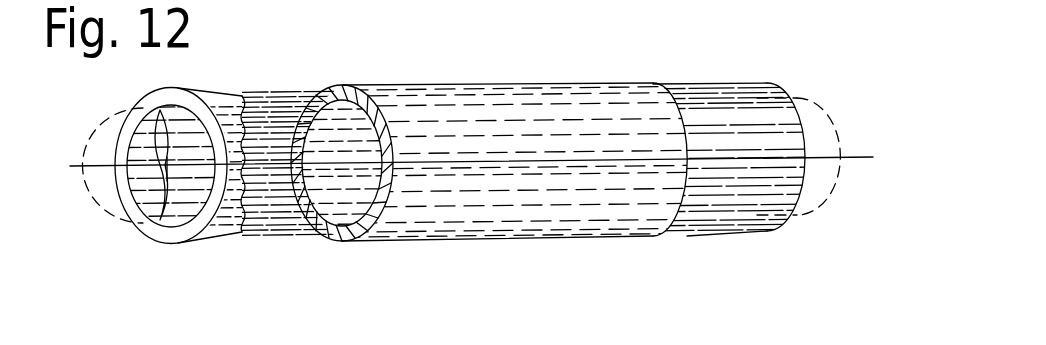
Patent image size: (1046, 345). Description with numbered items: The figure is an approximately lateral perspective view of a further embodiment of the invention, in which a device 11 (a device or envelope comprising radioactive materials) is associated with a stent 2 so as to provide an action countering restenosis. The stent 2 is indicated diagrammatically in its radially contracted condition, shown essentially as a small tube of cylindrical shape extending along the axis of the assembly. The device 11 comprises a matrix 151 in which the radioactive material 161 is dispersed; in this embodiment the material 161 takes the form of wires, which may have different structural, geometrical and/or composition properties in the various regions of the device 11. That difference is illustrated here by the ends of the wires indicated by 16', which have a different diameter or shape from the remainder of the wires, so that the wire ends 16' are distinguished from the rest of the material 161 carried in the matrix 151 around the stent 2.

The stent 2 is at (788, 262).
The device 11 is at (643, 250).
The matrix 151 is at (203, 92).
The ends of wires 16' is at (529, 164).
The material 161 is at (587, 103).